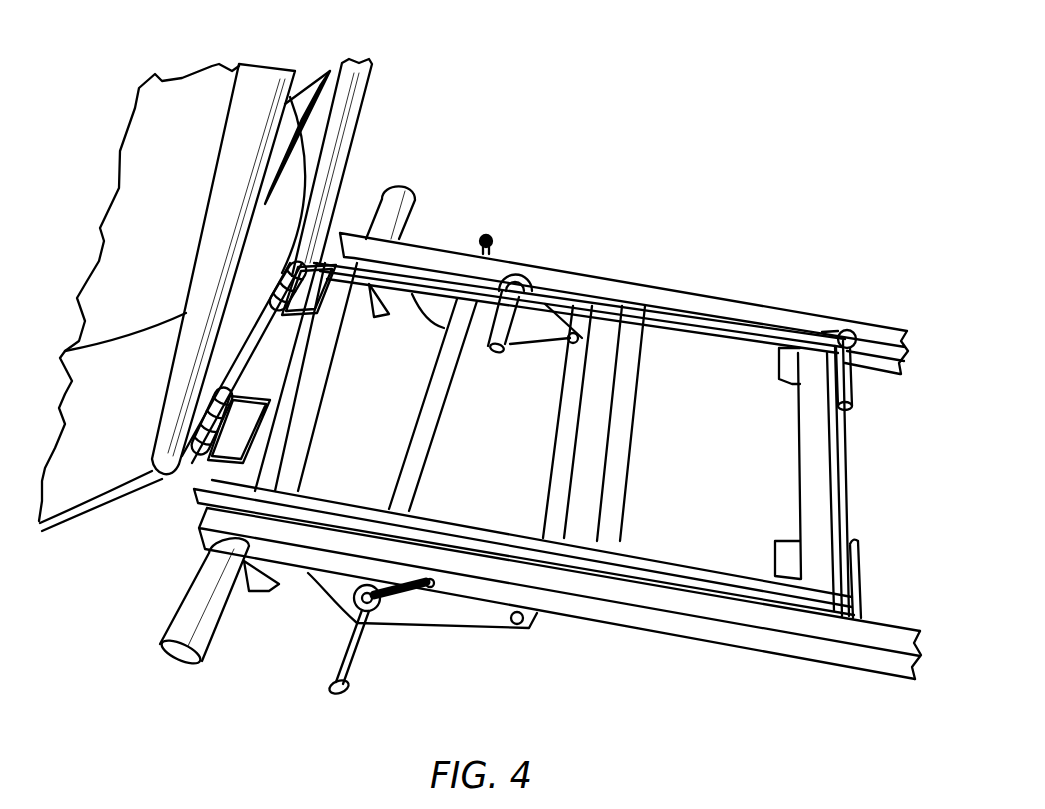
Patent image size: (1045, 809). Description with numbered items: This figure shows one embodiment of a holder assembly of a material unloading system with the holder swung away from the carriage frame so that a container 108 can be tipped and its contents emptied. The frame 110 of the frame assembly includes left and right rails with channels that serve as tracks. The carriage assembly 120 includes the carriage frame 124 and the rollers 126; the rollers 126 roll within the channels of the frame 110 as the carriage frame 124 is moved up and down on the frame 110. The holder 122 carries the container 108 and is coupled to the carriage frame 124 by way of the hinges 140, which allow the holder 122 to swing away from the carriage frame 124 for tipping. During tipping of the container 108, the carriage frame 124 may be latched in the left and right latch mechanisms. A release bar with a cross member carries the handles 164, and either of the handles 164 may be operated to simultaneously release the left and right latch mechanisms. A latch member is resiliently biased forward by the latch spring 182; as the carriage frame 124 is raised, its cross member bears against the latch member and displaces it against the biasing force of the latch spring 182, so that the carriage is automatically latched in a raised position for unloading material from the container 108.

The container 108 is at (155, 301).
The frame 110 is at (823, 657).
The carriage assembly 120 is at (849, 469).
The holder 122 is at (360, 103).
The carriage frame 124 is at (327, 387).
The rollers 126 is at (526, 272).
The hinges 140 is at (197, 462).
The handles 164 is at (487, 237).
The latch spring 182 is at (403, 595).